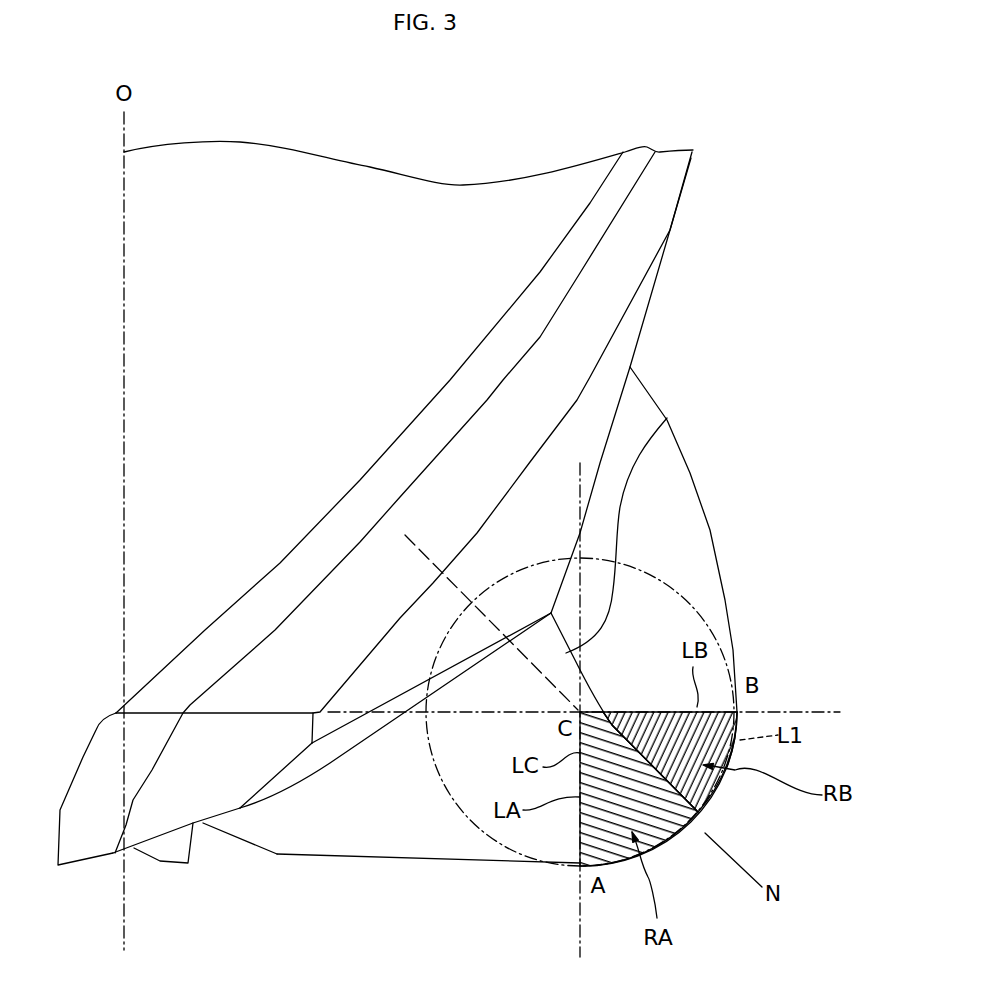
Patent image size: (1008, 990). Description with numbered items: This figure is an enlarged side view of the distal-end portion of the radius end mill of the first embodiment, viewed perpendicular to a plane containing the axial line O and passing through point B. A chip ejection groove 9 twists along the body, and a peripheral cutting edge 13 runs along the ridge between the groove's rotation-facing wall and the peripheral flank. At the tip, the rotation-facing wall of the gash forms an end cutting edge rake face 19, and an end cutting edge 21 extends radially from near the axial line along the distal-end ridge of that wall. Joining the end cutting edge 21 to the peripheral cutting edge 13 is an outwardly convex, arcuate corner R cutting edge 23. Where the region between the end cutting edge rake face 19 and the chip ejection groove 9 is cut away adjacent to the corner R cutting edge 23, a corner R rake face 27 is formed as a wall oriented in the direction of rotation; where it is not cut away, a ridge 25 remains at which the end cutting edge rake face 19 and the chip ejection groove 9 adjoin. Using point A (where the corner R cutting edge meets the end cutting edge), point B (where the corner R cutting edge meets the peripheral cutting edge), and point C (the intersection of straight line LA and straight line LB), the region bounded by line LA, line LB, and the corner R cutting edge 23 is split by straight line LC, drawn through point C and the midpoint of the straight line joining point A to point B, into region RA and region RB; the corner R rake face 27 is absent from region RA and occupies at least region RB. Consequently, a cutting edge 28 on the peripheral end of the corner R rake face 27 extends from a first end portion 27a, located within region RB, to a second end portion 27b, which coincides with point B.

The chip ejection groove 9 is at (667, 497).
The peripheral cutting edge 13 is at (718, 557).
The end cutting edge rake face 19 is at (408, 805).
The end cutting edge 21 is at (440, 860).
The corner R cutting edge 23 is at (667, 833).
The ridge 25 is at (667, 418).
The corner R rake face 27 is at (652, 712).
The first end portion 27a is at (703, 803).
The second end portion 27b is at (737, 710).
The cutting edge 28 is at (730, 757).